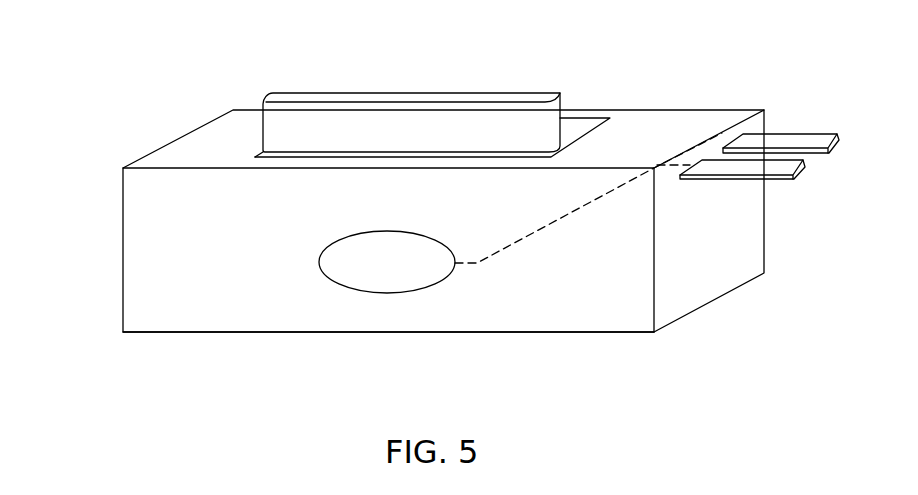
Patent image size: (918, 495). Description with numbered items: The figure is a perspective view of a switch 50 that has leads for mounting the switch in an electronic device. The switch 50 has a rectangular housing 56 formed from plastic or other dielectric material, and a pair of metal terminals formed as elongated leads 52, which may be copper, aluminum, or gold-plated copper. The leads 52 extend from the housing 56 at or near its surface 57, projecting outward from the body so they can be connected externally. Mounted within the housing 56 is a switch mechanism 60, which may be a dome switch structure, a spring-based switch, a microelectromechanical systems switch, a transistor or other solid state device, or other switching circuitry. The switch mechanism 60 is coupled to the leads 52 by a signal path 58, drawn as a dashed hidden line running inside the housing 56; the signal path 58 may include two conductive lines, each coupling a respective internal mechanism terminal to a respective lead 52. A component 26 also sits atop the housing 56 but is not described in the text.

The switch 50 is at (403, 229).
The battery 26 is at (515, 97).
The leads 52 is at (805, 137).
The switch housing 56 is at (193, 333).
The housing surface 57 is at (666, 121).
The signal path 58 is at (551, 220).
The switch mechanism 60 is at (433, 287).